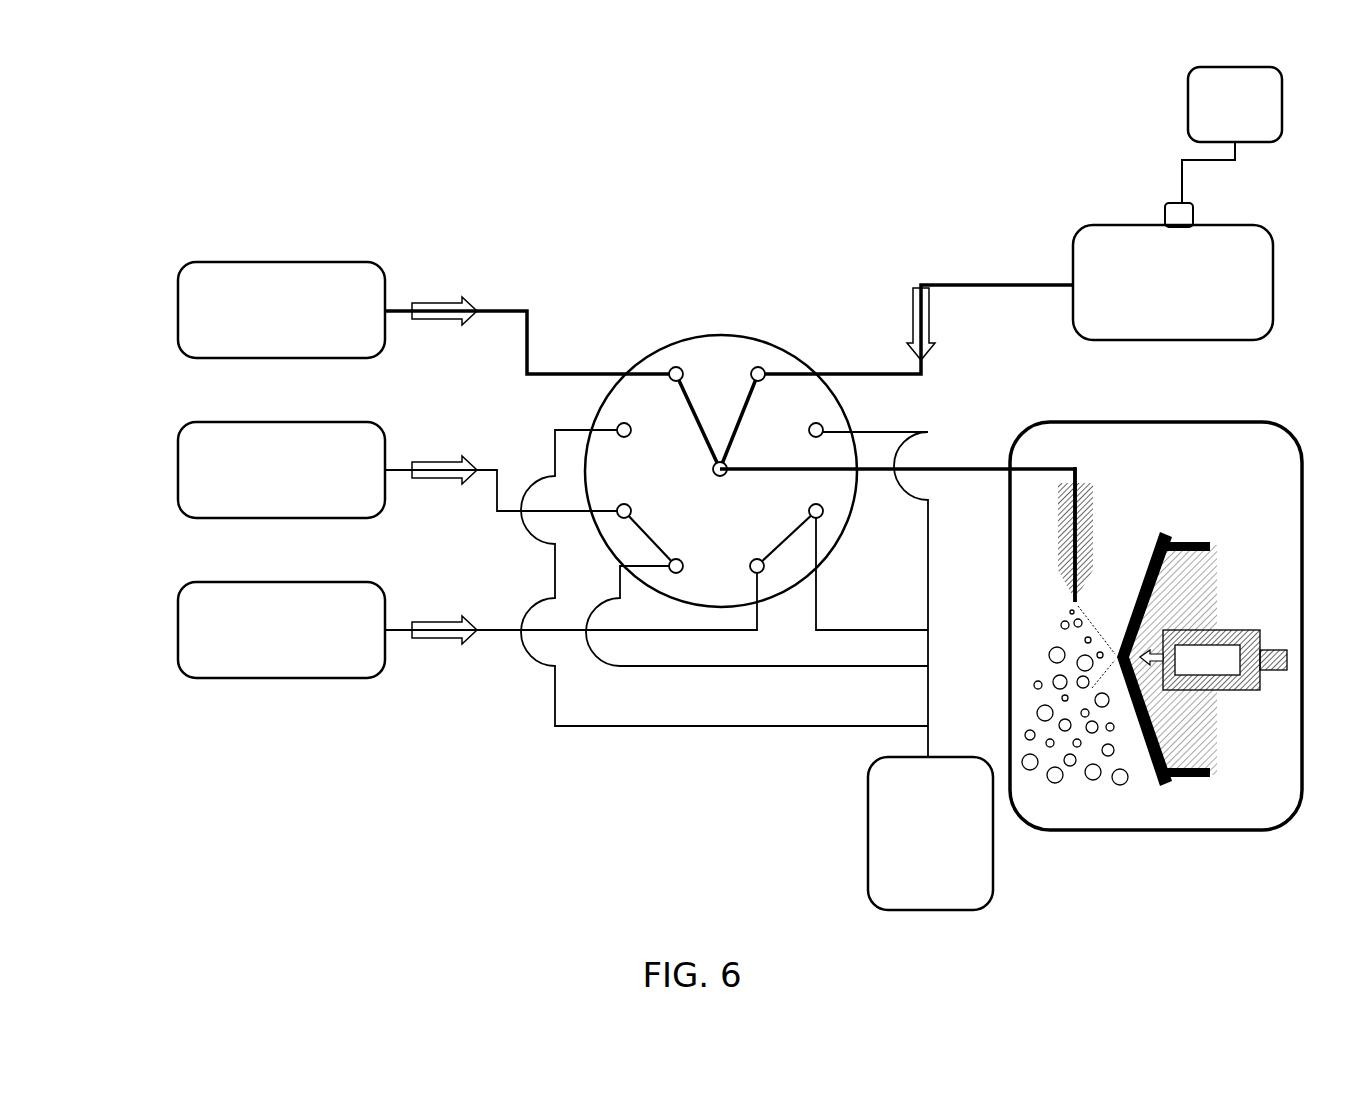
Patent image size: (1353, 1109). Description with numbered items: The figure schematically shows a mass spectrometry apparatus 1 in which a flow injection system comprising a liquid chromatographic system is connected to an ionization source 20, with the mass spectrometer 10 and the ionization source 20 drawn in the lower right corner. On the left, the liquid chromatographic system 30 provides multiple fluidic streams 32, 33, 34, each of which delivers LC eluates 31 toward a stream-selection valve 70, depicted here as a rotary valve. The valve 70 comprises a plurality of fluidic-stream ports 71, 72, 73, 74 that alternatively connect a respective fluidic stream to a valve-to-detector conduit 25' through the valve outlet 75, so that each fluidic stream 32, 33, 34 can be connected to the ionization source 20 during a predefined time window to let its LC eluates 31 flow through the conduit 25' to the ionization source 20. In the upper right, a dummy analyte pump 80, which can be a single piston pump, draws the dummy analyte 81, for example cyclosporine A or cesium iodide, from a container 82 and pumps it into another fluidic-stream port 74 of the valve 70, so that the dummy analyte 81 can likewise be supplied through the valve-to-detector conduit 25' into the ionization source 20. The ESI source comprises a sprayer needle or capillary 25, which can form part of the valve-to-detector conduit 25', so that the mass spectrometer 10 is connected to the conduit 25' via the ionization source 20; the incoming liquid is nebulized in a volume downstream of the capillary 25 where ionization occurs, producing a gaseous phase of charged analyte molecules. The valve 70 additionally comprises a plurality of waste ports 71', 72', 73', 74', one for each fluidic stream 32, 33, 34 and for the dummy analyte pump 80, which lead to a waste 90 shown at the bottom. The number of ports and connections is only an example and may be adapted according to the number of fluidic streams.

The spray drying / liquid processing system 1 is at (212, 800).
The mass spectrometer 10 is at (1198, 798).
The ionization source 20 is at (1107, 802).
The sprayer needle or capillary 25 is at (1113, 534).
The valve-to-detector conduit 25' is at (897, 540).
The liquid supply unit 30 is at (298, 240).
The LC eluates 31 is at (445, 298).
The fluidic stream 32 is at (258, 333).
The fluidic stream 33 is at (258, 489).
The fluidic stream 34 is at (258, 649).
The stream-selection valve 70 is at (717, 335).
The fluidic-stream port 71 is at (658, 315).
The waste port 71' is at (566, 408).
The fluidic-stream port 72 is at (648, 496).
The waste port 72' is at (676, 526).
The fluidic-stream port 73 is at (766, 526).
The waste port 73' is at (865, 545).
The fluidic-stream port 74 is at (799, 338).
The waste port 74' is at (875, 409).
The valve outlet port 75 is at (720, 461).
The dummy analyte pump 80 is at (1090, 255).
The dummy analyte 81 is at (913, 300).
The container 82 is at (1211, 124).
The waste 90 is at (905, 856).